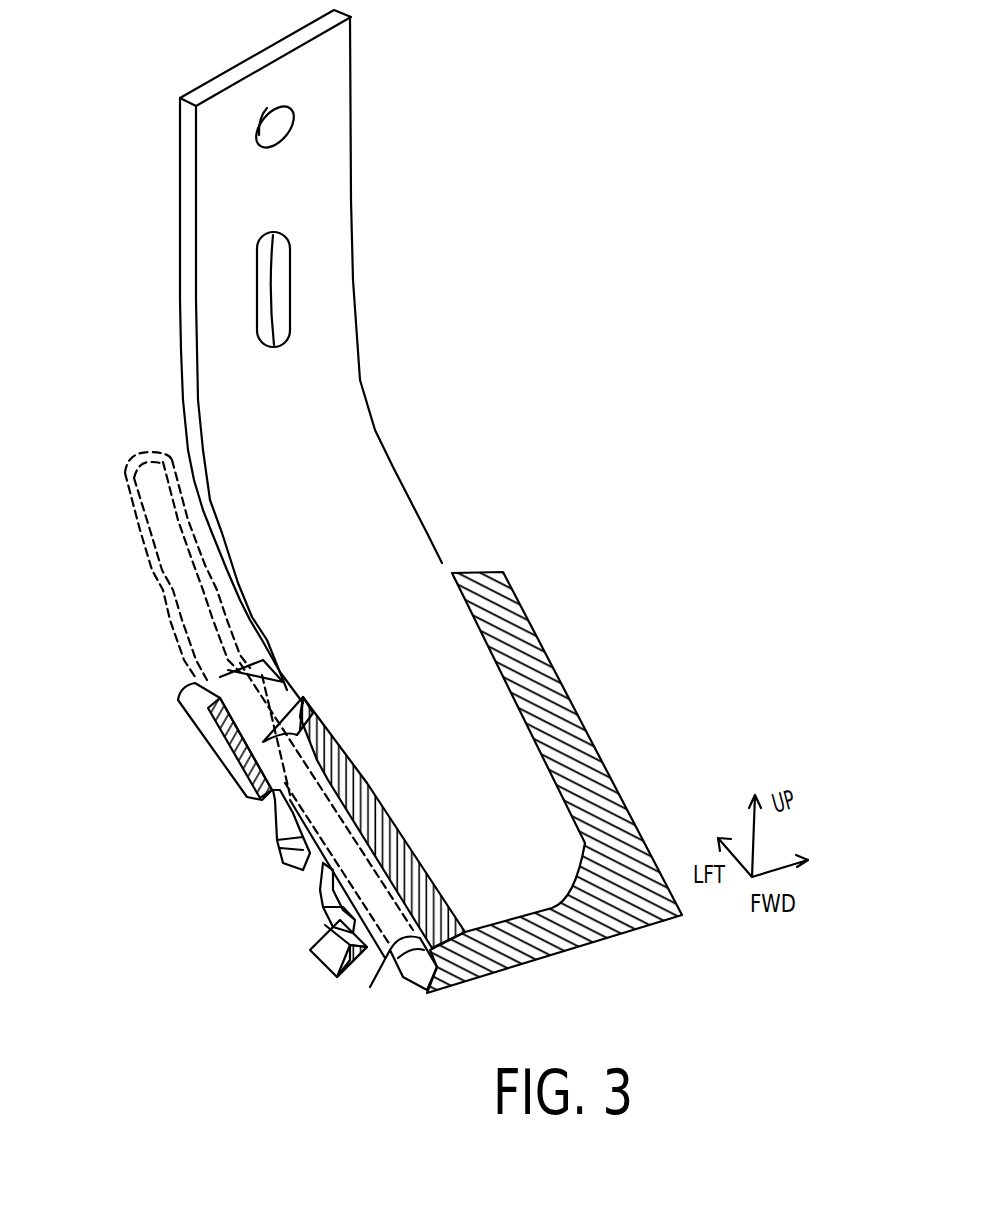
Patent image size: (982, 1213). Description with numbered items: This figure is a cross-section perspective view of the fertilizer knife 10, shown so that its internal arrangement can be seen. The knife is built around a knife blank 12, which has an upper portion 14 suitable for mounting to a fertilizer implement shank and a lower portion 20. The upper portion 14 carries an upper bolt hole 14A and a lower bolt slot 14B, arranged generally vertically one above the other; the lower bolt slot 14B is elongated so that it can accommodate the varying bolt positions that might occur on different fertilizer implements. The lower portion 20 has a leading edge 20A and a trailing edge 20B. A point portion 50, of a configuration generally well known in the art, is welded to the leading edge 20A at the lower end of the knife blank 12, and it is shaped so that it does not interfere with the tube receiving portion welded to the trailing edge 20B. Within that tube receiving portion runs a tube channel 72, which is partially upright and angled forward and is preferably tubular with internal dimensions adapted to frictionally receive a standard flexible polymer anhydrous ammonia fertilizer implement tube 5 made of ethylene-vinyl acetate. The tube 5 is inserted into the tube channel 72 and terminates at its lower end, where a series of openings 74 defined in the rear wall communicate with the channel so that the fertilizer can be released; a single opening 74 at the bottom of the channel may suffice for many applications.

The fertilizer knife 10 is at (468, 143).
The knife blank 12 is at (310, 468).
The upper portion 14 is at (310, 201).
The upper bolt hole 14A is at (290, 127).
The lower bolt slot 14B is at (290, 298).
The lower portion 20 is at (468, 782).
The leading edge 20A is at (442, 563).
The trailing edge 20B is at (197, 683).
The point portion 50 is at (577, 710).
The tube channel 72 is at (250, 713).
The opening 74 is at (272, 812).
The fertilizer implement tube 5 is at (170, 603).